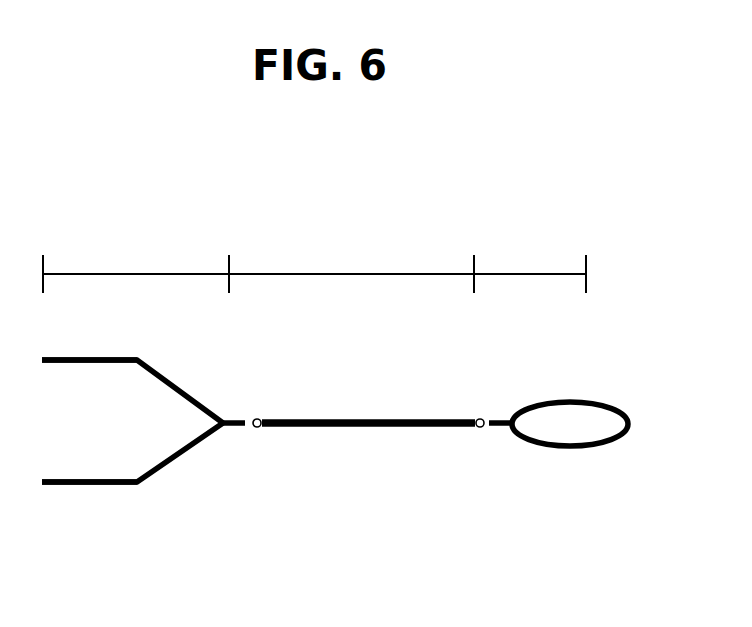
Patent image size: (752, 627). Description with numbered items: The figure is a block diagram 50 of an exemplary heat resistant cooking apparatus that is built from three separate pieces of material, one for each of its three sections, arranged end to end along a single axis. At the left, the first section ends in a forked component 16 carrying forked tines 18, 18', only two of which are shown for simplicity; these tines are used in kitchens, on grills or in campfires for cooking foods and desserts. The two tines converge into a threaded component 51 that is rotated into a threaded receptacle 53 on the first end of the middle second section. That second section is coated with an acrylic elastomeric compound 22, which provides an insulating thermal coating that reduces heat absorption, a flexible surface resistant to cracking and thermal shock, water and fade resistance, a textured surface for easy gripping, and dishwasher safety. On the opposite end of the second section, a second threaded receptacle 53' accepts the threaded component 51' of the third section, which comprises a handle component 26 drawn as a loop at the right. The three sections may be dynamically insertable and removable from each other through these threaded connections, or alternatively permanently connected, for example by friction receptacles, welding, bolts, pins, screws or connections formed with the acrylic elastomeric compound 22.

The block diagram 50 is at (522, 177).
The forked component 16 is at (180, 386).
The forked tine 18 is at (112, 335).
The forked tine 18' is at (89, 523).
The threaded component 51 is at (228, 458).
The threaded receptacle 53 is at (270, 456).
The acrylic elastomeric compound 22 is at (362, 419).
The threaded receptacle 53' is at (459, 456).
The threaded component 51' is at (499, 458).
The handle component 26 is at (528, 407).